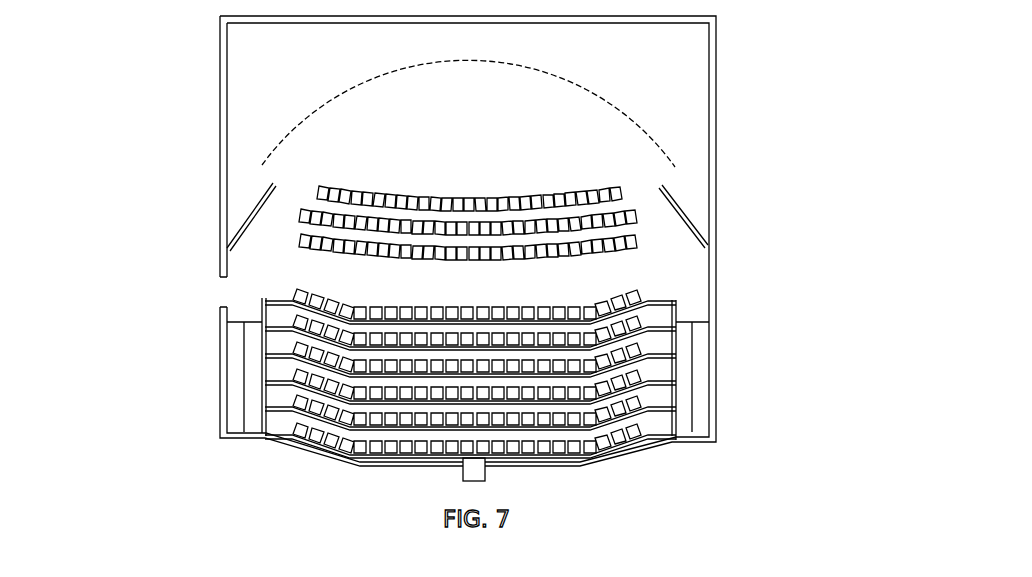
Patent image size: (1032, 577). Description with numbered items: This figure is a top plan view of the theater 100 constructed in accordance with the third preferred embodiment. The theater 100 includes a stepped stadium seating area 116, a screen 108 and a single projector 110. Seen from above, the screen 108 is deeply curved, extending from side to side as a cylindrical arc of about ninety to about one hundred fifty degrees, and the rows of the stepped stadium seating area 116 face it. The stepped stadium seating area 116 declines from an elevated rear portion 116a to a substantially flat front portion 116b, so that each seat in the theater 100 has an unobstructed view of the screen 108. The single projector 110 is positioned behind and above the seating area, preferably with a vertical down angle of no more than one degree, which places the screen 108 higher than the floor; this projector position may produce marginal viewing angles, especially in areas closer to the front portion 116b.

The theater 100 is at (757, 128).
The screen 108 is at (293, 128).
The projector 110 is at (462, 474).
The stepped stadium seating area 116 is at (385, 342).
The elevated rear portion 116a is at (300, 428).
The substantially flat front portion 116b is at (318, 190).